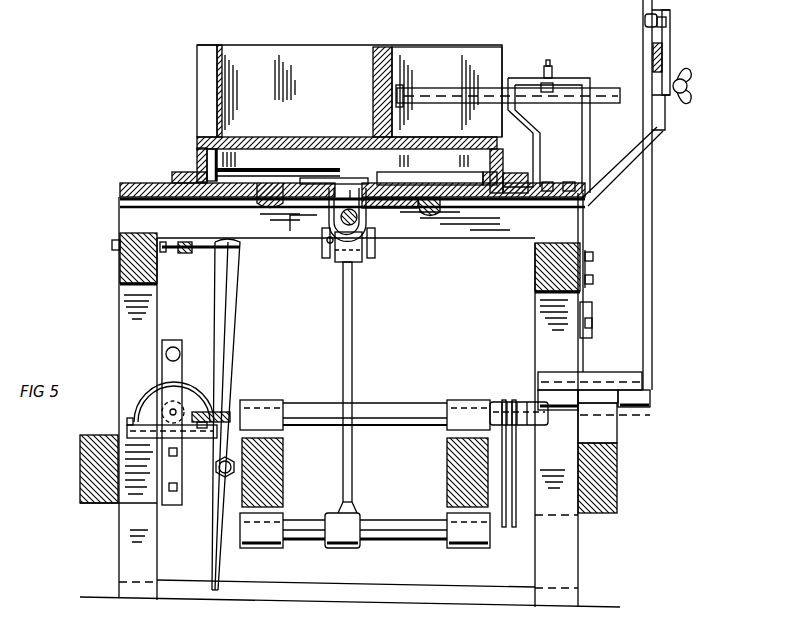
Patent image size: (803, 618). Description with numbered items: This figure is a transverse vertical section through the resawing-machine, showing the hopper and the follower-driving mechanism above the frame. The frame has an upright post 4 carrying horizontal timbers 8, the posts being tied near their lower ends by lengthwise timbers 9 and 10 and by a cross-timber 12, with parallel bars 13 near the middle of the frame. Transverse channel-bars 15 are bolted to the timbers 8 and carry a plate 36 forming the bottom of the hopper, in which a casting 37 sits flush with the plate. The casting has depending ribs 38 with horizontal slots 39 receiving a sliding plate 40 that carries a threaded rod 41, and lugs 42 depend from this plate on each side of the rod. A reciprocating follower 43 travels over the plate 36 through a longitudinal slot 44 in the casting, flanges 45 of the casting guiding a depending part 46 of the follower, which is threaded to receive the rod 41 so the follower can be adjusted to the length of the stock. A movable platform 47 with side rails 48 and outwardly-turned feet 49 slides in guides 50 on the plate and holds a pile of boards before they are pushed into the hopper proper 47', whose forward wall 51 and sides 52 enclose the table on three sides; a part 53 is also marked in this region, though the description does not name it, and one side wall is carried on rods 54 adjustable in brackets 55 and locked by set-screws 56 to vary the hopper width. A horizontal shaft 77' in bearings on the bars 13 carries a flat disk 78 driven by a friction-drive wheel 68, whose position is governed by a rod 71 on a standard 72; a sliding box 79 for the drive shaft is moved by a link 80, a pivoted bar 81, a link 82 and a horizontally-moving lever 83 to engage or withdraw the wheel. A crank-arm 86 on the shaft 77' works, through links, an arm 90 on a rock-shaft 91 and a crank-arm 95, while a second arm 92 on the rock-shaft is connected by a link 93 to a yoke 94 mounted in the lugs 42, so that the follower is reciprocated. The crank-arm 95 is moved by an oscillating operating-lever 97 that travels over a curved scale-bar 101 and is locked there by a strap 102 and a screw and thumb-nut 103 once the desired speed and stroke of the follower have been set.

The upright post 4 is at (158, 333).
The horizontal timbers 8 is at (120, 276).
The timber 9 is at (620, 478).
The timber 10 is at (78, 478).
The cross-timber 12 is at (366, 522).
The parallel bars 13 is at (283, 470).
The transverse channel-bars 15 is at (518, 240).
The plate 36 is at (132, 183).
The casting 37 is at (425, 216).
The depending flanges or ribs 38 is at (430, 210).
The horizontal slots 39 is at (410, 215).
The sliding plate 40 is at (395, 215).
The threaded rod 41 is at (340, 236).
The lugs 42 is at (325, 232).
The reciprocating follower 43 is at (277, 163).
The longitudinally-arranged slot 44 is at (392, 181).
The flanges 45 is at (334, 167).
The depending part 46 is at (352, 186).
The movable hopper platform or table 47 is at (347, 128).
The hopper proper 47' is at (235, 165).
The side rails 48 is at (197, 160).
The outwardly-turned feet 49 is at (532, 176).
The guides 50 is at (178, 172).
The forward end or wall of the hopper 51 is at (336, 54).
The sides of the hopper 52 is at (197, 72).
The guide 53 is at (224, 203).
The rods 54 is at (446, 95).
The brackets 55 is at (568, 80).
The set-screws 56 is at (548, 66).
The friction-drive wheel 68 is at (188, 382).
The rod 71 is at (180, 352).
The standard 72 is at (160, 365).
The horizontal shaft 77' is at (365, 398).
The flat-surfaced disk 78 is at (213, 553).
The sliding box 79 is at (150, 410).
The link 80 is at (236, 398).
The bar 81 is at (234, 362).
The link 82 is at (206, 250).
The horizontally-moving lever 83 is at (183, 254).
The crank-arm 86 is at (500, 402).
The arm 90 is at (513, 477).
The rock-shaft 91 is at (398, 532).
The second arm 92 is at (352, 392).
The link 93 is at (348, 252).
The yoke 94 is at (347, 227).
The crank-arm 95 is at (594, 391).
The oscillating operating-lever 97 is at (654, 150).
The curved bar 101 is at (664, 57).
The strap 102 is at (668, 34).
The screw and thumb-nut 103 is at (690, 90).